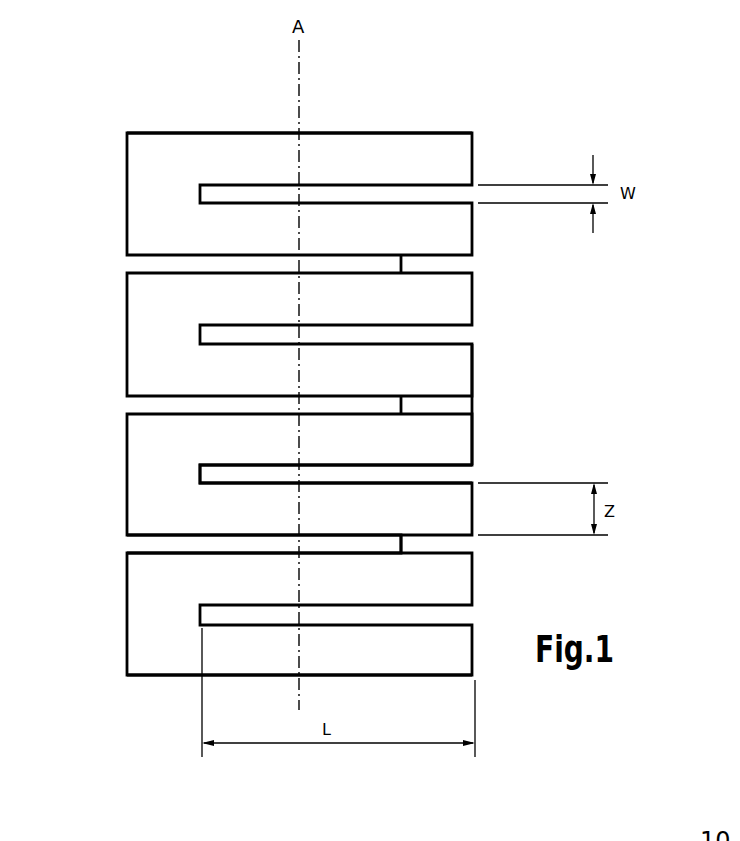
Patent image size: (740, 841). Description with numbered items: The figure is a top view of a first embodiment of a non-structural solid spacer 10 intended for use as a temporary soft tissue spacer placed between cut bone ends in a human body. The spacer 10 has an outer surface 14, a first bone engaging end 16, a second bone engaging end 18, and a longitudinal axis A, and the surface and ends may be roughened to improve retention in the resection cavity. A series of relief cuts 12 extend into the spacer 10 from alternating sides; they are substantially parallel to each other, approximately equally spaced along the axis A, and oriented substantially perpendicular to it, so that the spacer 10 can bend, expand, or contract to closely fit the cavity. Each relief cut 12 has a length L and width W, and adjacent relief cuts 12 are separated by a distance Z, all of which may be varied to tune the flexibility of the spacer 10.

The spacer 10 is at (528, 82).
The relief cuts 12 is at (213, 474).
The outer surface 14 is at (450, 405).
The first bone engaging end 16 is at (393, 133).
The second bone engaging end 18 is at (157, 676).